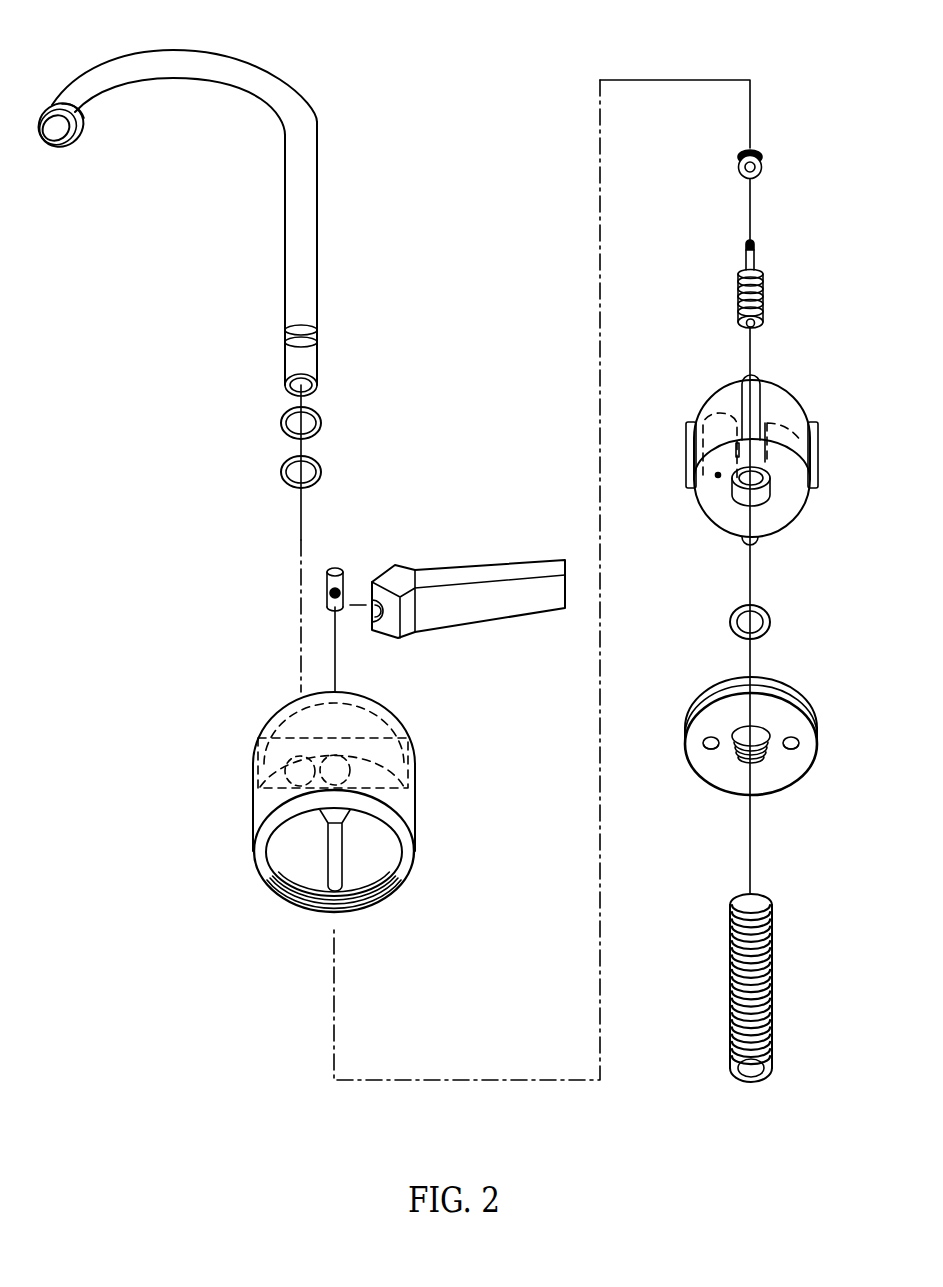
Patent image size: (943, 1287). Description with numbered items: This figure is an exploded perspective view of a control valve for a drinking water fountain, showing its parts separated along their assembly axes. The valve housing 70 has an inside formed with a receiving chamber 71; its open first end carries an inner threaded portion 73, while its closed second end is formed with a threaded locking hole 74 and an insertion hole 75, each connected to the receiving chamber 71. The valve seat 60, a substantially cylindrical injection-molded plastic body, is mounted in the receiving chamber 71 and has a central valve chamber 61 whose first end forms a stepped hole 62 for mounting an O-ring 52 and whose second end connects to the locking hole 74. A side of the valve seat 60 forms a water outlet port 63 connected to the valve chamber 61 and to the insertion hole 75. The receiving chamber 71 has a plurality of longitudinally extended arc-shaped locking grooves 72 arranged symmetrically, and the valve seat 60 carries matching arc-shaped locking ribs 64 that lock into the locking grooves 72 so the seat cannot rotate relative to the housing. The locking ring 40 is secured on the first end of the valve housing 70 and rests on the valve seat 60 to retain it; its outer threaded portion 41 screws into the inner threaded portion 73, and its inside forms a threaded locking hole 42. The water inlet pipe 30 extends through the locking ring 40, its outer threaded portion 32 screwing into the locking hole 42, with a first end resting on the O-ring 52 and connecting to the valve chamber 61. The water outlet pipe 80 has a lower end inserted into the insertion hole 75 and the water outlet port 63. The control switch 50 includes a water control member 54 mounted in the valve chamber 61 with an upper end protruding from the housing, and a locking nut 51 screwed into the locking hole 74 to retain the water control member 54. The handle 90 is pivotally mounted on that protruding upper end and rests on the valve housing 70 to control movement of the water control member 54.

The water inlet pipe 30 is at (747, 1035).
The outer threaded portion 32 is at (758, 1010).
The locking ring 40 is at (767, 726).
The outer threaded portion 41 is at (793, 694).
The threaded locking hole 42 is at (735, 757).
The control switch 50 is at (755, 231).
The locking nut 51 is at (760, 153).
The O-ring 52 is at (725, 625).
The water control member 54 is at (748, 258).
The valve seat 60 is at (742, 478).
The valve chamber 61 is at (768, 425).
The stepped hole 62 is at (762, 492).
The water outlet port 63 is at (700, 428).
The locking ribs 64 is at (813, 440).
The valve housing 70 is at (341, 827).
The receiving chamber 71 is at (367, 837).
The locking grooves 72 is at (327, 843).
The inner threaded portion 73 is at (340, 888).
The threaded locking hole 74 is at (428, 764).
The insertion hole 75 is at (290, 752).
The water outlet pipe 80 is at (322, 306).
The handle 90 is at (477, 565).